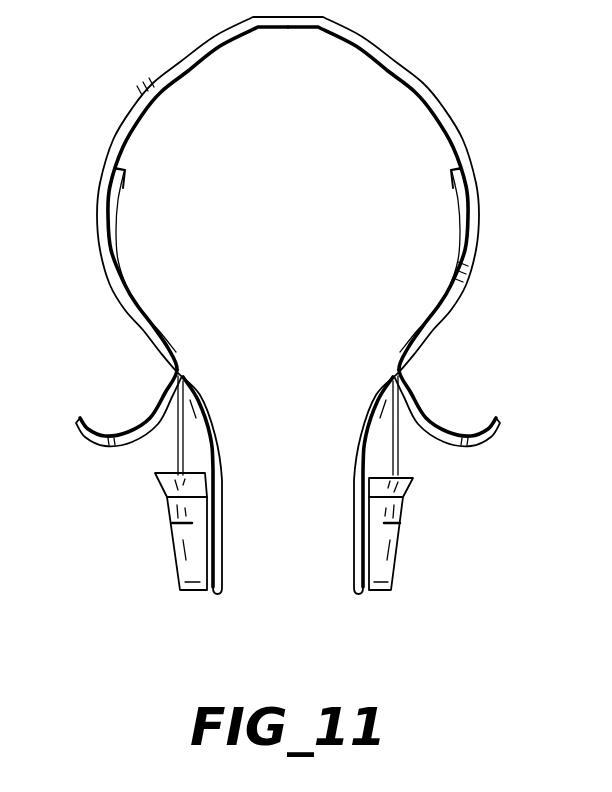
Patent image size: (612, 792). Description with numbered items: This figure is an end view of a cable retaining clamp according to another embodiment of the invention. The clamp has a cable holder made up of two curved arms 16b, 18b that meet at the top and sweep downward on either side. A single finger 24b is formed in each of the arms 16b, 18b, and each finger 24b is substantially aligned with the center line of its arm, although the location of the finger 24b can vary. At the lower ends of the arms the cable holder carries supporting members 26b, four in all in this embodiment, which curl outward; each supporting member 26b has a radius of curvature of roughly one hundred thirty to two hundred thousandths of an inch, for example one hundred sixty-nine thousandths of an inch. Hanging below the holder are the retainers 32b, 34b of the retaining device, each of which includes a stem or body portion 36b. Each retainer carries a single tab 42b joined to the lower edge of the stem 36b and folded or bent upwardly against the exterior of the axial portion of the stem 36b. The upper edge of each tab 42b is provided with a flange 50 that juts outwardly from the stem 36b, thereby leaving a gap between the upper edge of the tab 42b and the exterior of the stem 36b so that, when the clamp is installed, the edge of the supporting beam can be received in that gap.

The arm 16b is at (132, 110).
The arm 18b is at (447, 125).
The finger 24b is at (455, 186).
The supporting member 26b is at (112, 430).
The retainer 32b is at (182, 594).
The retainer 34b is at (388, 598).
The stem 36b is at (355, 535).
The tab 42b is at (175, 548).
The flange 50 is at (160, 483).